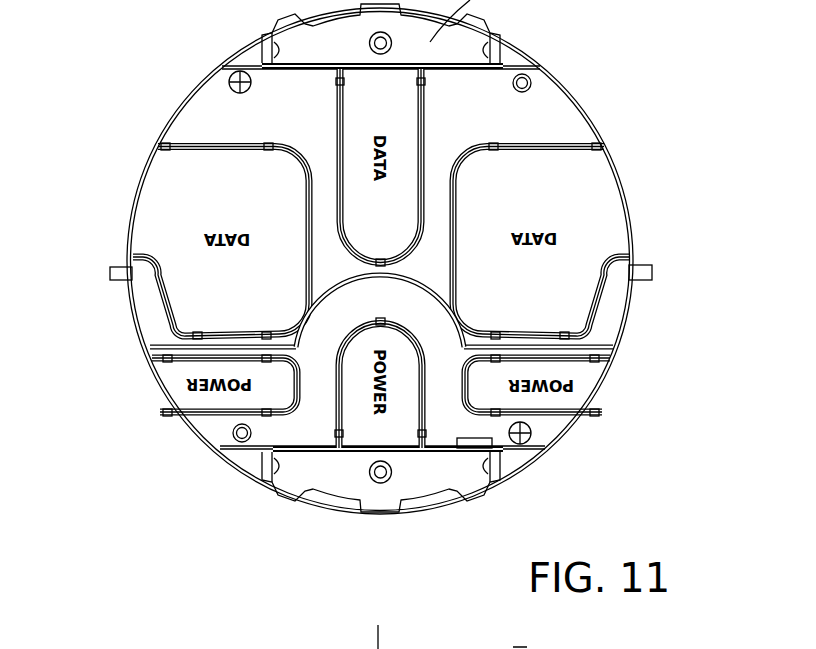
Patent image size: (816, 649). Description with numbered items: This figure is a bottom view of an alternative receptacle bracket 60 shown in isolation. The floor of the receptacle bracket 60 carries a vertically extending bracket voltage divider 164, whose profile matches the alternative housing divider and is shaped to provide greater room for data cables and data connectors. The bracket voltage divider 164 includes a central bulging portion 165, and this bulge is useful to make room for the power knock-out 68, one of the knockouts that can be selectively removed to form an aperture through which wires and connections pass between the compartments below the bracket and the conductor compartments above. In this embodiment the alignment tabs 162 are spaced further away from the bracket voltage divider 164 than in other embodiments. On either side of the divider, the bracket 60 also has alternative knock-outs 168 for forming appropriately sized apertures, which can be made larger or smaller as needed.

The receptacle bracket 60 is at (574, 92).
The knockout 68 is at (393, 423).
The alignment tab 162 is at (654, 275).
The bracket voltage divider 164 is at (493, 342).
The central bulging portion 165 is at (413, 292).
The alternative knock-out 168 is at (187, 267).